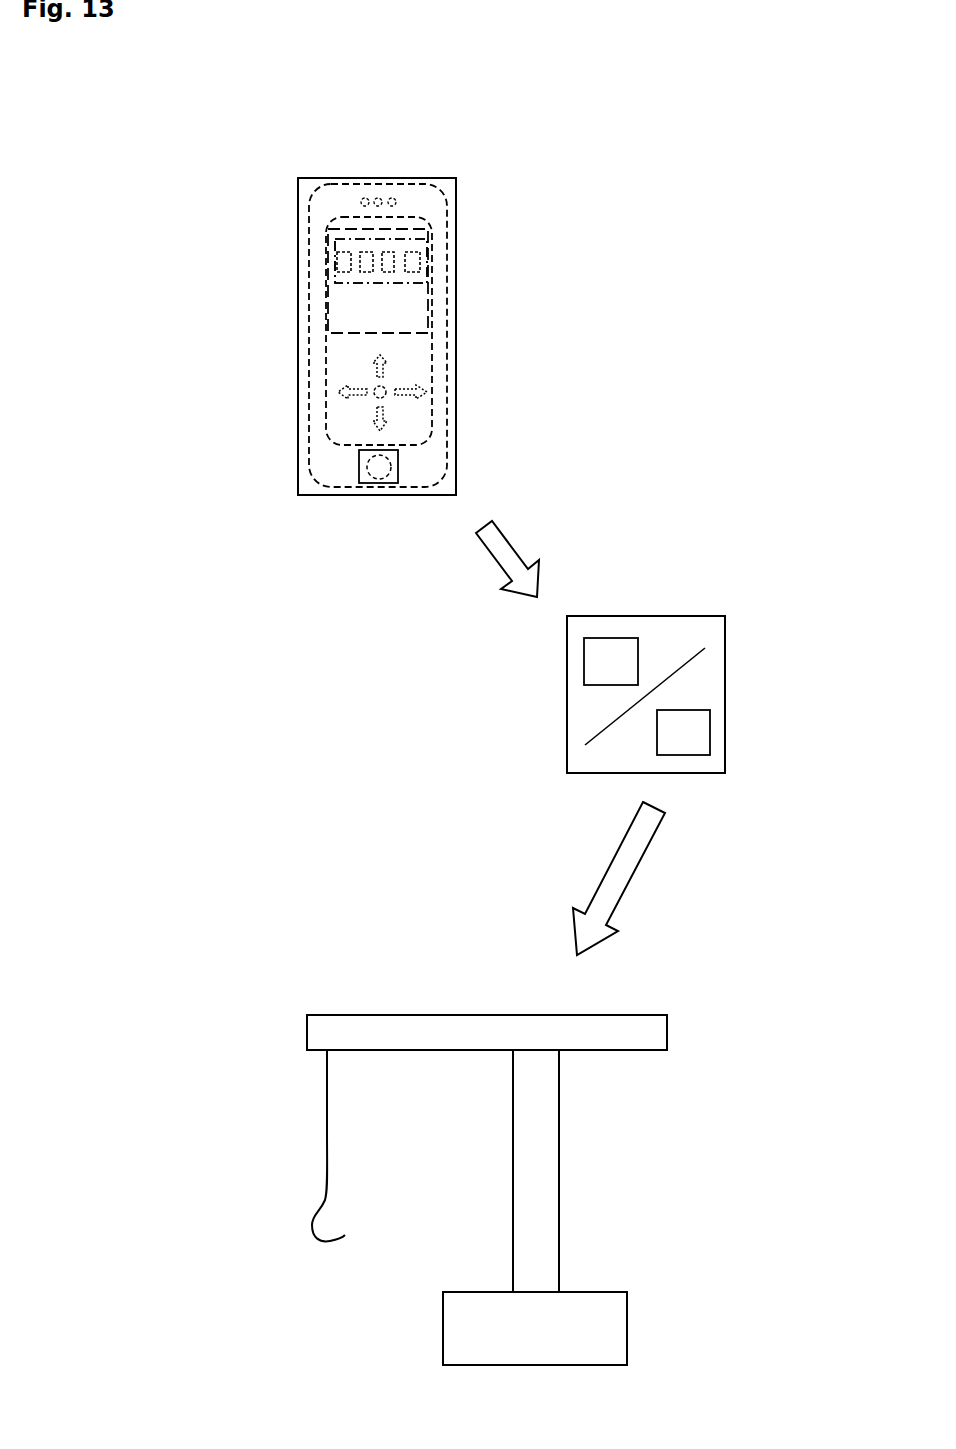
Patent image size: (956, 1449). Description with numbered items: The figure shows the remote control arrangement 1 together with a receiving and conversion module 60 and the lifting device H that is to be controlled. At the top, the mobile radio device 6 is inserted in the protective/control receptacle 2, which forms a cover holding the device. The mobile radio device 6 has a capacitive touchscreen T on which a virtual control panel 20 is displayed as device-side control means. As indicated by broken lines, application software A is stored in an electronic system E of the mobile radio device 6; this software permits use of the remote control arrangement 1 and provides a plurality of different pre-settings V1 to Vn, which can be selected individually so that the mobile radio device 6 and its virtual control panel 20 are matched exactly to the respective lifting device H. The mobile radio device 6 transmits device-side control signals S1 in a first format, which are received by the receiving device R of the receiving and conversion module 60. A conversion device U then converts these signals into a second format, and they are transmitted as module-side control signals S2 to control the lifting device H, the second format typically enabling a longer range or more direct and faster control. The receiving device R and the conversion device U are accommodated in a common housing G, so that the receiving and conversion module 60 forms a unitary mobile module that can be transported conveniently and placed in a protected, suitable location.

The remote control arrangement 1 is at (220, 180).
The protective/control receptacle 2 is at (433, 178).
The mobile radio device 6 is at (457, 240).
The virtual control panel 20 is at (442, 358).
The electronic system E is at (420, 323).
The first pre-setting V1 is at (345, 270).
The n-th pre-setting Vn is at (428, 265).
The application software A is at (353, 290).
The touchscreen T is at (410, 425).
The device-side control signals S1 is at (518, 557).
The receiving and conversion module 60 is at (564, 676).
The common housing G is at (667, 615).
The receiving device R is at (611, 661).
The conversion device U is at (683, 732).
The module-side control signals S2 is at (609, 878).
The lifting device H is at (339, 990).